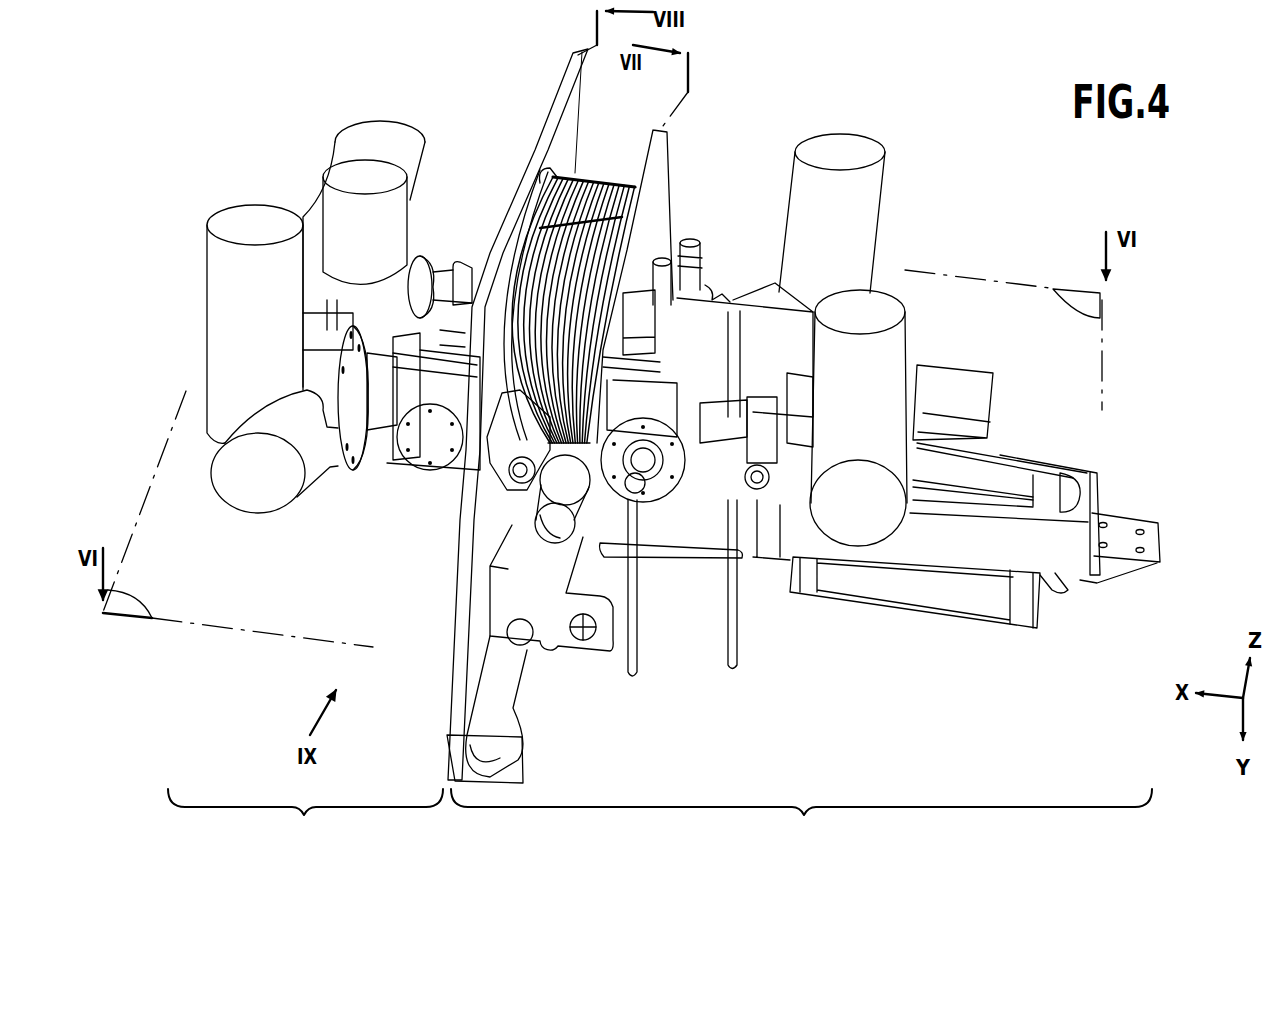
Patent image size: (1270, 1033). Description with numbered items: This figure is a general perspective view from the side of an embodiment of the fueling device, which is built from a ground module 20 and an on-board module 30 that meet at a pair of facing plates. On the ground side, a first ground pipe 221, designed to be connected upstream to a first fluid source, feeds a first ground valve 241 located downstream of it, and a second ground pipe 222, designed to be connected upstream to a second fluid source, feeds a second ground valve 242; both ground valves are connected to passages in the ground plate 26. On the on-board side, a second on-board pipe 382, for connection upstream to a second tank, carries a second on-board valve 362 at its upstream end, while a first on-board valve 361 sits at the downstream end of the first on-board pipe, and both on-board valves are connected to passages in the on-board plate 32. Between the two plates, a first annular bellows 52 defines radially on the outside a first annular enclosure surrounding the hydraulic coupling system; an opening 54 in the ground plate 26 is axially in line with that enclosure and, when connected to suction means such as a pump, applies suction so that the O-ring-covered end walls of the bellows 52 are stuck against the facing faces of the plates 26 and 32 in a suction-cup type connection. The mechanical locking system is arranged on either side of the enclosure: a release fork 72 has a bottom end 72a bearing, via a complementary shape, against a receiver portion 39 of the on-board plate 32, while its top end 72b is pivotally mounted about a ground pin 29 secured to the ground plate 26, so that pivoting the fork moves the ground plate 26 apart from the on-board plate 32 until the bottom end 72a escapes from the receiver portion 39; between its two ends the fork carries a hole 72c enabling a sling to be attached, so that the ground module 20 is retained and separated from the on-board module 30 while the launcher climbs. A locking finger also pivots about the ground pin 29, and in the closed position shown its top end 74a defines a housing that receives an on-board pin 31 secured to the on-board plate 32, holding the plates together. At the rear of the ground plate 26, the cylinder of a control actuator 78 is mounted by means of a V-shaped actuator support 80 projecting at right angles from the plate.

The ground module 20 is at (801, 818).
The on-board module 30 is at (305, 818).
The on-board plate 32 is at (538, 110).
The ground plate 26 is at (677, 150).
The first annular bellows 52 is at (594, 168).
The opening 54 is at (642, 300).
The first on-board valve 361 is at (428, 252).
The second on-board valve 362 is at (347, 476).
The second on-board pipe 382 is at (195, 366).
The top end of locking finger 74a is at (500, 475).
The on-board pin 31 is at (505, 505).
The ground pin 29 is at (553, 527).
The release fork 72 is at (527, 694).
The bottom end of release fork 72a is at (490, 743).
The top end of release fork 72b is at (645, 552).
The lever bore 72c is at (582, 641).
The receiver portion 39 is at (456, 770).
The first ground valve 241 is at (867, 195).
The second ground valve 242 is at (850, 525).
The first ground pipe 221 is at (972, 383).
The second ground pipe 222 is at (969, 478).
The actuator support 80 is at (1087, 477).
The control actuator 78 is at (966, 627).